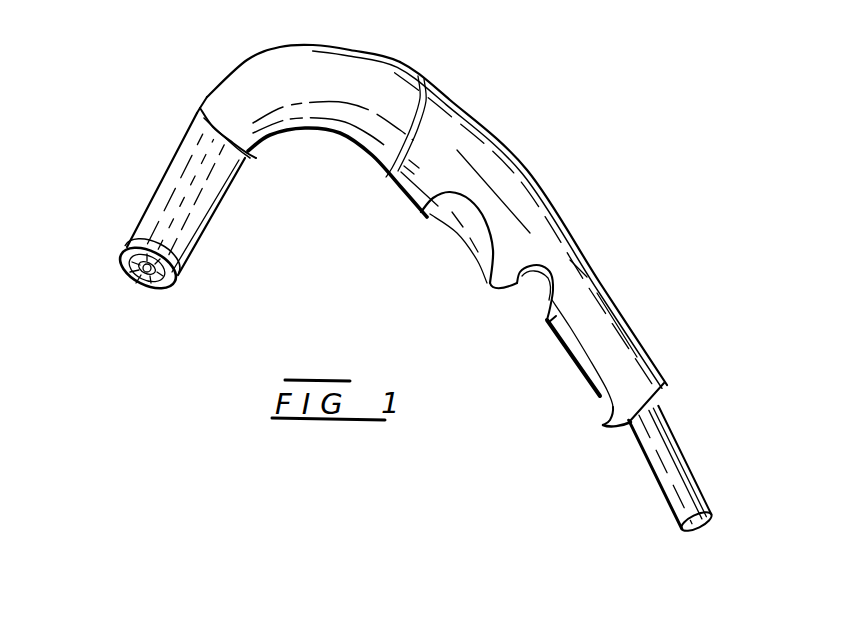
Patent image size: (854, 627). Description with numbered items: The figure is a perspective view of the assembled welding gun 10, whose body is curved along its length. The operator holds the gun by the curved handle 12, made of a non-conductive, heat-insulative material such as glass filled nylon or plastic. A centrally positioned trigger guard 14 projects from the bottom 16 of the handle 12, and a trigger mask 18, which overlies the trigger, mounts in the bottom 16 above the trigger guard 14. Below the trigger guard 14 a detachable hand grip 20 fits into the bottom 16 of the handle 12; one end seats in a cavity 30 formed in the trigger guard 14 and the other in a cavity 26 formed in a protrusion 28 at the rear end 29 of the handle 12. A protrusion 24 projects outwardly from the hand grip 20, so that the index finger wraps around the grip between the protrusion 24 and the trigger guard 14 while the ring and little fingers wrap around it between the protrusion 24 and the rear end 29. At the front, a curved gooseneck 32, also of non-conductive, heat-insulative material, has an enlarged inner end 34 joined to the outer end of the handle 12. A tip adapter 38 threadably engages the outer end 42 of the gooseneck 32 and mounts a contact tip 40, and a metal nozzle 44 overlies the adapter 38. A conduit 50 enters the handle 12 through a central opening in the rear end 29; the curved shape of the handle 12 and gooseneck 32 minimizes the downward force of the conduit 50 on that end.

The welding gun 10 is at (678, 198).
The curved handle 12 is at (483, 125).
The trigger guard 14 is at (489, 288).
The bottom of the handle 16 is at (397, 192).
The trigger mask 18 is at (437, 212).
The detachable hand grip 20 is at (561, 350).
The protrusion 24 is at (548, 330).
The cavity 26 is at (602, 409).
The protrusion 28 is at (603, 424).
The rear end of the handle 29 is at (629, 428).
The cavity 30 is at (516, 296).
The curved gooseneck 32 is at (341, 56).
The enlarged inner end 34 is at (416, 74).
The tip adapter 38 is at (201, 119).
The contact tip 40 is at (125, 270).
The outer end of the gooseneck 42 is at (227, 123).
The metal nozzle 44 is at (168, 186).
The conduit 50 is at (672, 526).